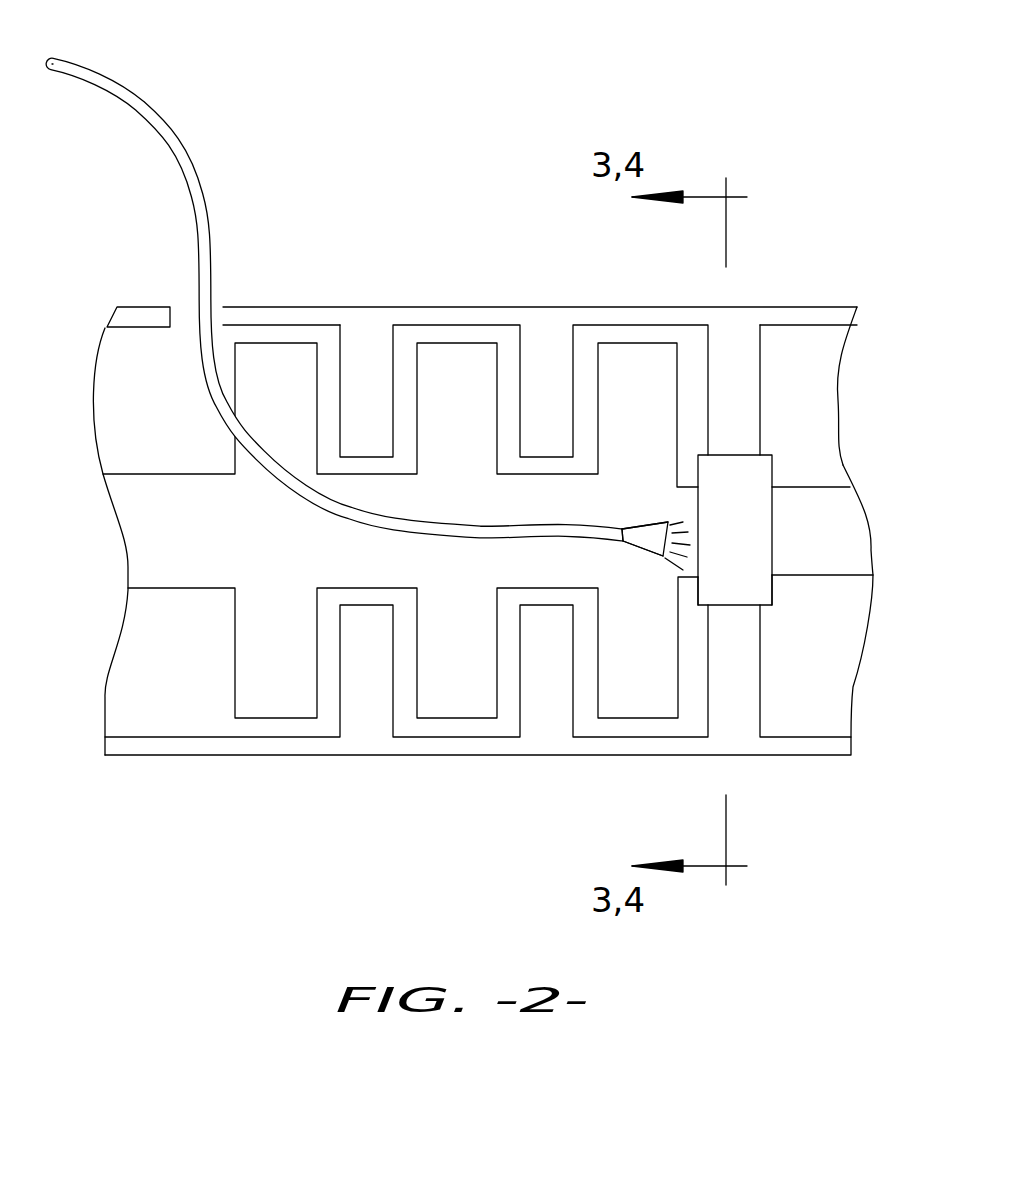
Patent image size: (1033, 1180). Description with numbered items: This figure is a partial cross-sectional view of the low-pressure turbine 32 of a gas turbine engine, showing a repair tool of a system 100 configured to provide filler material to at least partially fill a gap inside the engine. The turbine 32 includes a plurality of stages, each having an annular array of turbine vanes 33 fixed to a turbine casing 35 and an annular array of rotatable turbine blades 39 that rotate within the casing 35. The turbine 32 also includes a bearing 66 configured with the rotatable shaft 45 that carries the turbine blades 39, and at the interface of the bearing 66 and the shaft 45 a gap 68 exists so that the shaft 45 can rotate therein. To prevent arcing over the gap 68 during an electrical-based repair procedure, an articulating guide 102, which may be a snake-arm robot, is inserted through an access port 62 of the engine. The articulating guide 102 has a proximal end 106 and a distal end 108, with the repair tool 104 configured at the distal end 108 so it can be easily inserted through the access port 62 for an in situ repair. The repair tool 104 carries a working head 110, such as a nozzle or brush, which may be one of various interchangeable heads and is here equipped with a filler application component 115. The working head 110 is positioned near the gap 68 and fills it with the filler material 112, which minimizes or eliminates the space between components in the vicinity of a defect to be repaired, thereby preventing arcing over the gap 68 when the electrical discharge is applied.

The low-pressure turbine 32 is at (808, 213).
The turbine vanes 33 is at (577, 373).
The turbine casing 35 is at (425, 307).
The turbine blades 39 is at (413, 363).
The rotatable shaft 45 is at (827, 578).
The access port 62 is at (178, 299).
The bearing 66 is at (776, 467).
The gap 68 is at (690, 609).
The system 100 is at (379, 407).
The articulating guide 102 is at (206, 207).
The repair tool 104 is at (654, 519).
The proximal end 106 is at (120, 84).
The distal end 108 is at (623, 540).
The working head 110 is at (633, 527).
The filler material 112 is at (675, 562).
The filler application component 115 is at (647, 556).